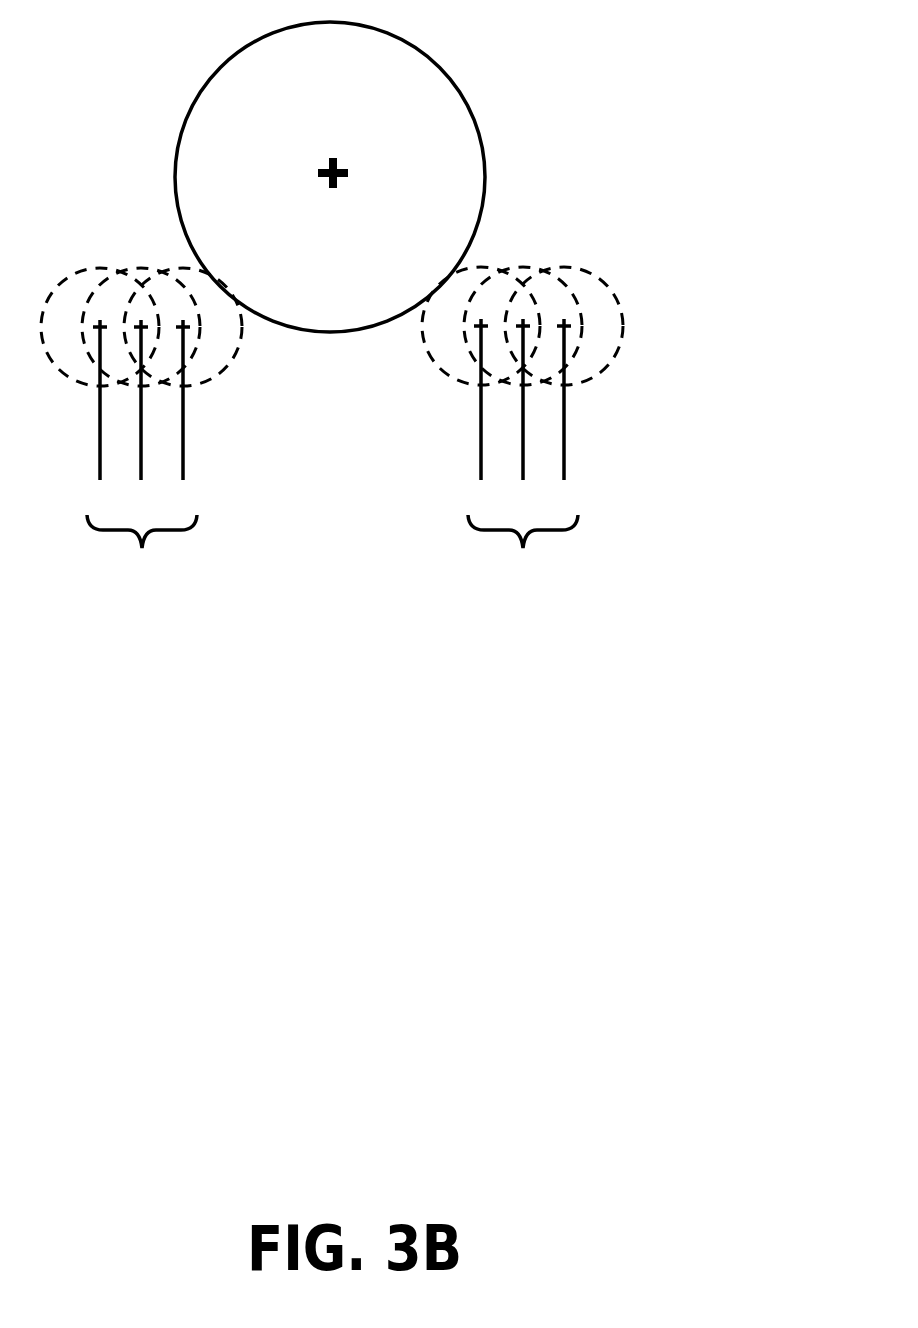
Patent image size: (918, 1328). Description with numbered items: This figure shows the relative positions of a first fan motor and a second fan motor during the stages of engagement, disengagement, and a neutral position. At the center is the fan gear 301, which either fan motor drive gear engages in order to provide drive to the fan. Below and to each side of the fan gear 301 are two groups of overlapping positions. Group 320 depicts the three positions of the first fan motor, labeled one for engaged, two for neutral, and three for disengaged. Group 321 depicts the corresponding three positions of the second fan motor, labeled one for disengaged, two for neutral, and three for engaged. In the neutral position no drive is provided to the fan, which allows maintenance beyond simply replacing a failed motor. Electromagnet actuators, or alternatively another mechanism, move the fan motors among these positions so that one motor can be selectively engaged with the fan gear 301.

The fan gear 301 is at (449, 71).
The group 320 is at (143, 556).
The group 321 is at (524, 556).